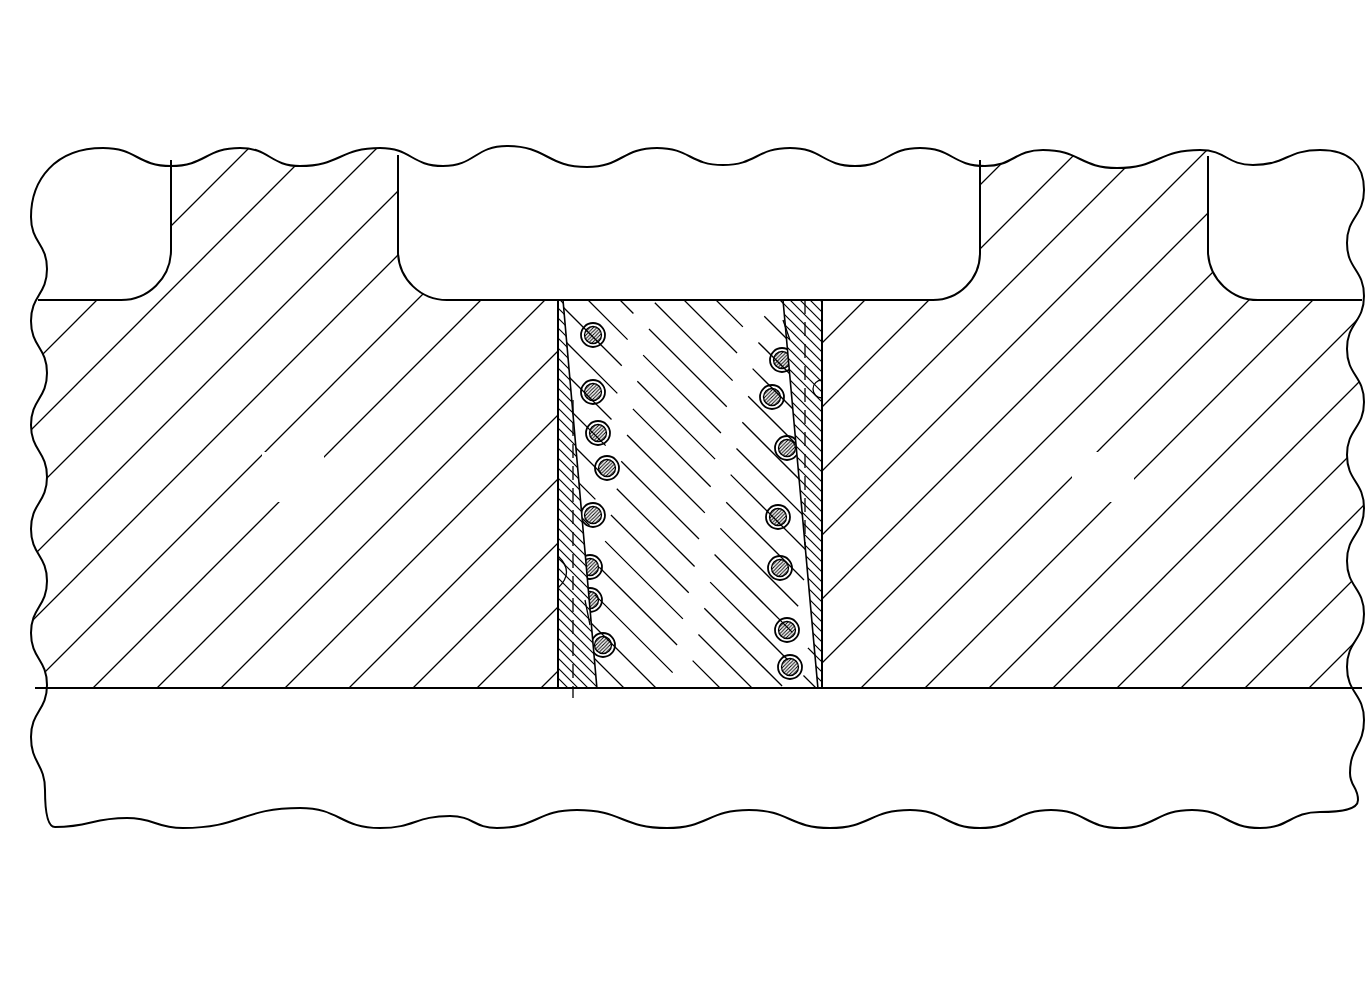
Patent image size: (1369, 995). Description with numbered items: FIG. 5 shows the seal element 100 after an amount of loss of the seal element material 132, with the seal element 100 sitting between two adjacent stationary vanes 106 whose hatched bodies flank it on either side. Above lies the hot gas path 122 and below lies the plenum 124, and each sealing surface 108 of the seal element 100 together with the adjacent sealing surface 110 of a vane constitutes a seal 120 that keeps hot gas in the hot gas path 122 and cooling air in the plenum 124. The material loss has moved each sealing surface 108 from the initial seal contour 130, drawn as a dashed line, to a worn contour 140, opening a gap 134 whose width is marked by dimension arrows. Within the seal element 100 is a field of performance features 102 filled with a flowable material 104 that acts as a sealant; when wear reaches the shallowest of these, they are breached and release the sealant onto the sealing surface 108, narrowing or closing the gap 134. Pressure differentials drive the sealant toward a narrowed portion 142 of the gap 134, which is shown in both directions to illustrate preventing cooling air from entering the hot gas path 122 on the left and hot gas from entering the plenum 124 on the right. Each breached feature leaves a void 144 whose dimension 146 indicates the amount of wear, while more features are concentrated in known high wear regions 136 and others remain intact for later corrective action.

The seal element 100 is at (673, 273).
The performance features 102 is at (618, 466).
The flowable material 104 is at (565, 440).
The stationary vanes 106 is at (318, 496).
The sealing surface 108 is at (785, 334).
The adjacent sealing surface 110 is at (822, 397).
The seal 120 is at (812, 268).
The hot gas path 122 is at (717, 220).
The plenum 124 is at (927, 768).
The initial seal contour 130 is at (807, 300).
The seal element material 132 is at (681, 312).
The gap 134 is at (620, 363).
The high wear regions 136 is at (792, 292).
The worn contour 140 is at (783, 312).
The narrowed portion 142 is at (551, 319).
The void 144 is at (588, 470).
The dimension 146 is at (592, 530).